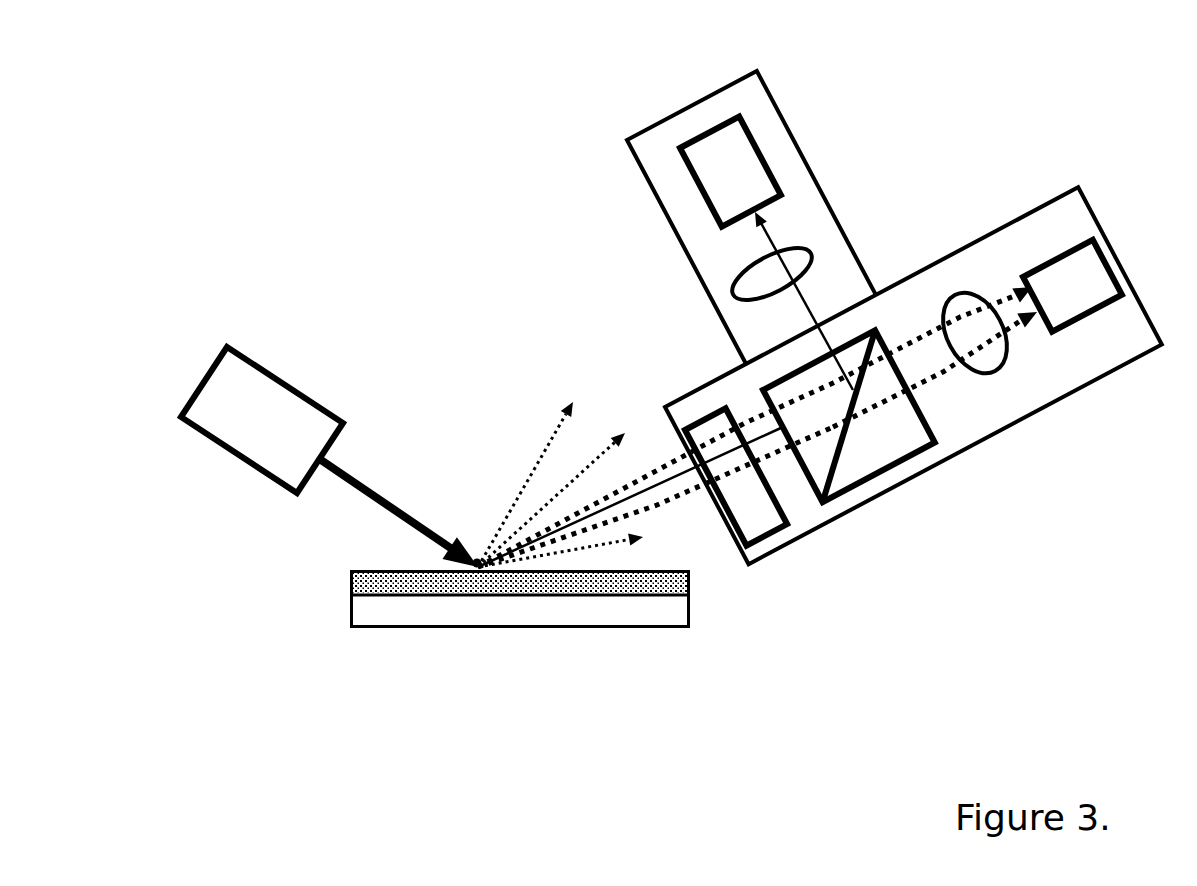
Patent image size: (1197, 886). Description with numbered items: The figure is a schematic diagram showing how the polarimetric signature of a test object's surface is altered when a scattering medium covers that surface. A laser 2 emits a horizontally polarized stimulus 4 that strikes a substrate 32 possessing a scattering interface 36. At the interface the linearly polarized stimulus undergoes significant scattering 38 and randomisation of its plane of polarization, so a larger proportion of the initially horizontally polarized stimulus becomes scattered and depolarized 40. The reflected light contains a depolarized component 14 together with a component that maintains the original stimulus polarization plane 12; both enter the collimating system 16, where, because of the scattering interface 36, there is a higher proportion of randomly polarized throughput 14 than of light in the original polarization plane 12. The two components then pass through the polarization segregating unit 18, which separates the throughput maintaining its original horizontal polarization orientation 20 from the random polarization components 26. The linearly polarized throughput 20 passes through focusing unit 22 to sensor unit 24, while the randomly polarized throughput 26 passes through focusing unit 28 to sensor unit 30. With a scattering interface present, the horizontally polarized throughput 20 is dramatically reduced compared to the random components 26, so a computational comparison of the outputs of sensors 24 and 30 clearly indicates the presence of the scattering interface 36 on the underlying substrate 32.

The laser 2 is at (235, 398).
The horizontally polarized stimulus 4 is at (373, 492).
The original stimulus polarization plane 12 is at (678, 473).
The depolarized reflected component 14 is at (657, 505).
The collimating system 16 is at (752, 495).
The polarization segregating unit 18 is at (872, 438).
The linearly polarized throughput 20 is at (805, 307).
The focusing unit 22 is at (760, 273).
The sensor unit 24 is at (730, 173).
The randomly polarized throughput 26 is at (943, 372).
The focusing unit 28 is at (972, 338).
The sensor unit 30 is at (1068, 288).
The substrate 32 is at (392, 608).
The scattering interface 36 is at (550, 580).
The scattering 38 is at (476, 560).
The scattered and depolarized stimulus 40 is at (543, 452).